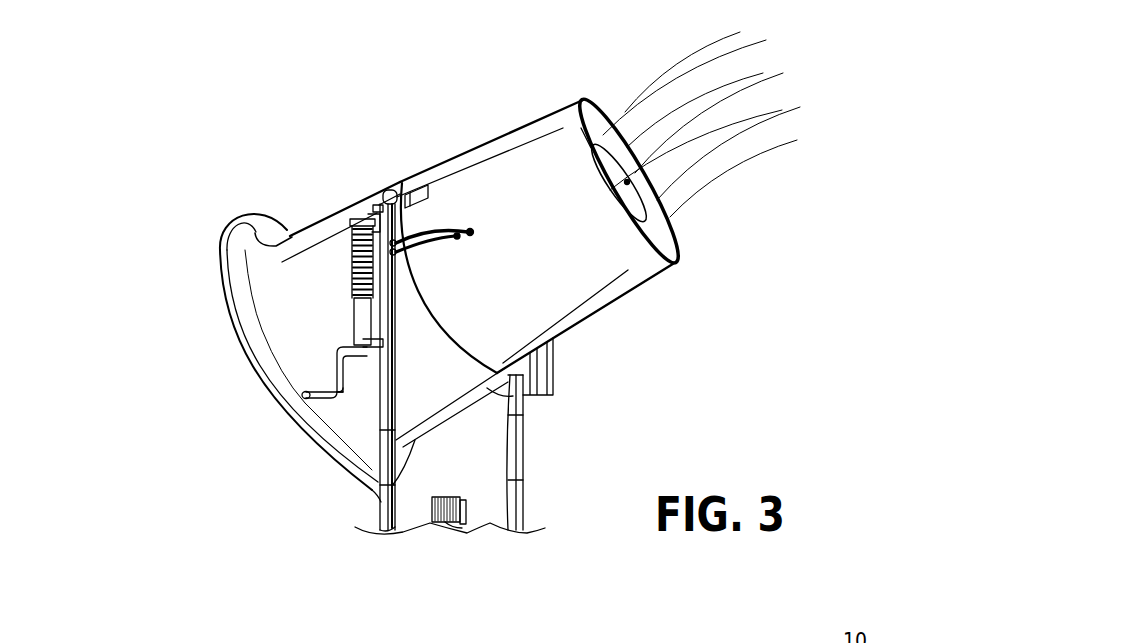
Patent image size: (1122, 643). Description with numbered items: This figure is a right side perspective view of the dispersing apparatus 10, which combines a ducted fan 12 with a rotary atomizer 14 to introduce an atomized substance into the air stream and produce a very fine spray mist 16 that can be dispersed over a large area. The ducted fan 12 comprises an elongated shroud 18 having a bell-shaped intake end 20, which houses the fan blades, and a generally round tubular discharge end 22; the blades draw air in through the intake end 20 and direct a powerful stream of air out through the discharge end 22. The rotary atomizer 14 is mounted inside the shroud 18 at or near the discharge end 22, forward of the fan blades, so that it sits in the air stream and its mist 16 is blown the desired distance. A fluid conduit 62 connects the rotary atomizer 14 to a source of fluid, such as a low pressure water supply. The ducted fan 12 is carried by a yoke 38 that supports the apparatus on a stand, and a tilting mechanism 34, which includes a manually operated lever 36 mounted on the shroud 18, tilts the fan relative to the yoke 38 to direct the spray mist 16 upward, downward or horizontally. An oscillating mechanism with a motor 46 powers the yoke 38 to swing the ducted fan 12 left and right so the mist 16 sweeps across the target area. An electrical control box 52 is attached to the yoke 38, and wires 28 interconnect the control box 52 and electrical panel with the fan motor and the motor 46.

The dispersing apparatus 10 is at (292, 100).
The ducted fan 12 is at (425, 152).
The rotary atomizer 14 is at (648, 210).
The spray mist 16 is at (801, 166).
The shroud 18 is at (506, 190).
The intake end 20 is at (200, 238).
The discharge end 22 is at (583, 84).
The wires 28 is at (514, 497).
The tilting mechanism 34 is at (340, 272).
The lever 36 is at (336, 373).
The yoke 38 is at (385, 509).
The motor 46 is at (447, 527).
The electrical control box 52 is at (543, 373).
The fluid conduit 62 is at (430, 240).